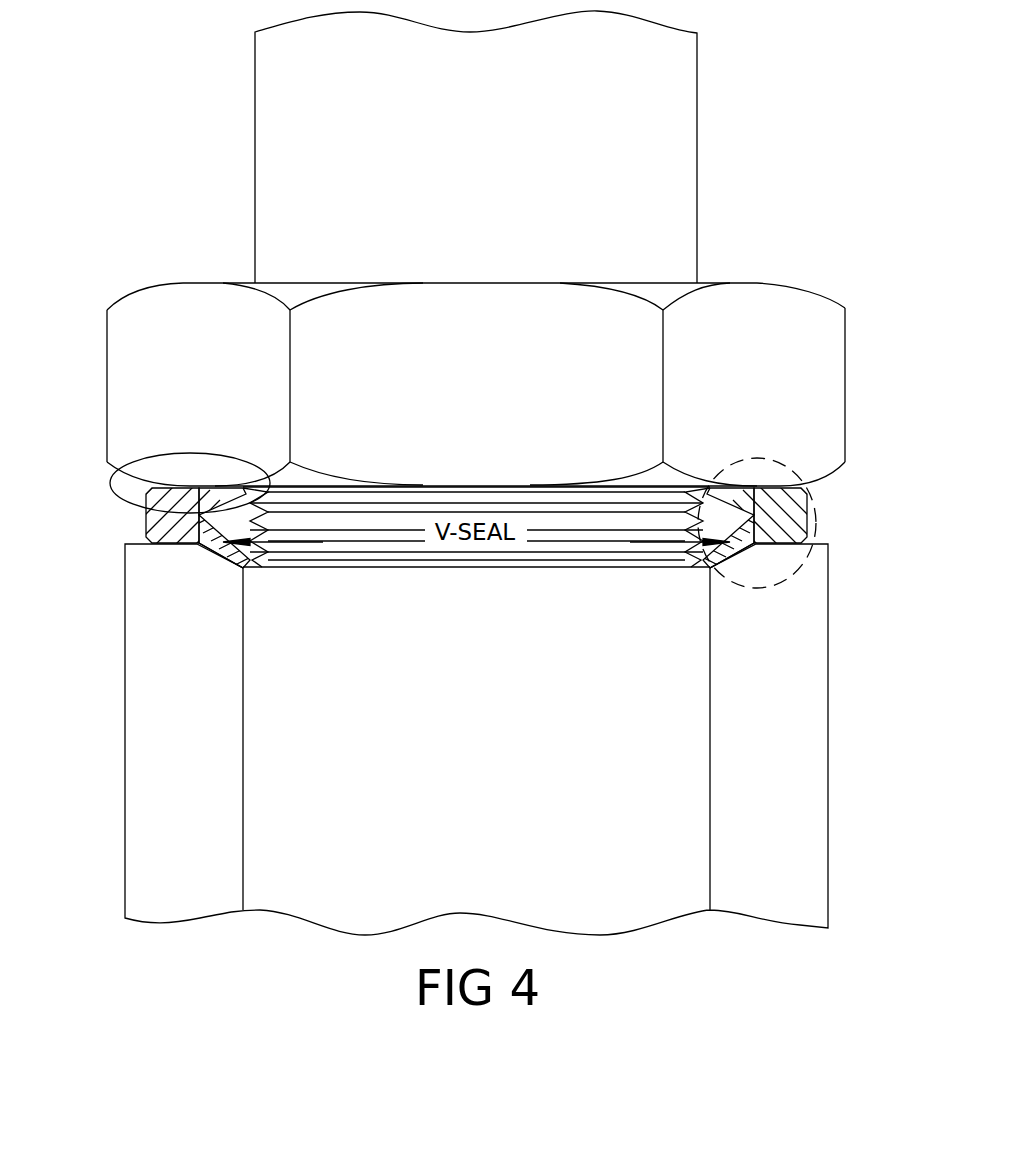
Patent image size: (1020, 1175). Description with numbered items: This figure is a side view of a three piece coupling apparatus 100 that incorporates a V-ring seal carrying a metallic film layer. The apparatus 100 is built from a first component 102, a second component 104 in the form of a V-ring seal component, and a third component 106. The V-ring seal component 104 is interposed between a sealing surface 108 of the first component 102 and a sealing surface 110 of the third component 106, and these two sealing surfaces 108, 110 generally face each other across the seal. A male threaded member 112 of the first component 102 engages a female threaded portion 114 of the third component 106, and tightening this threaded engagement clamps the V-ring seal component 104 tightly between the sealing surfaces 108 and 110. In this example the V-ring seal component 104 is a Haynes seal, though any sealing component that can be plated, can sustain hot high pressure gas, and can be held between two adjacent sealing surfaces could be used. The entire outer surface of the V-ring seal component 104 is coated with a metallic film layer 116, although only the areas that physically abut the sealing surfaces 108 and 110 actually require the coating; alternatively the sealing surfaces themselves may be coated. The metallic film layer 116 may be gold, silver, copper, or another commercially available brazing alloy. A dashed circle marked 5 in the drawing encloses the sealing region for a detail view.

The three piece coupling apparatus 100 is at (80, 268).
The first component 102 is at (670, 210).
The V-ring seal component 104 is at (840, 519).
The third component 106 is at (795, 733).
The sealing surface 108 is at (112, 470).
The sealing surface 110 is at (743, 553).
The male threaded member 112 is at (808, 398).
The female threaded portion 114 is at (257, 507).
The metallic film layer 116 is at (210, 544).
The detail view reference 5 is at (823, 597).